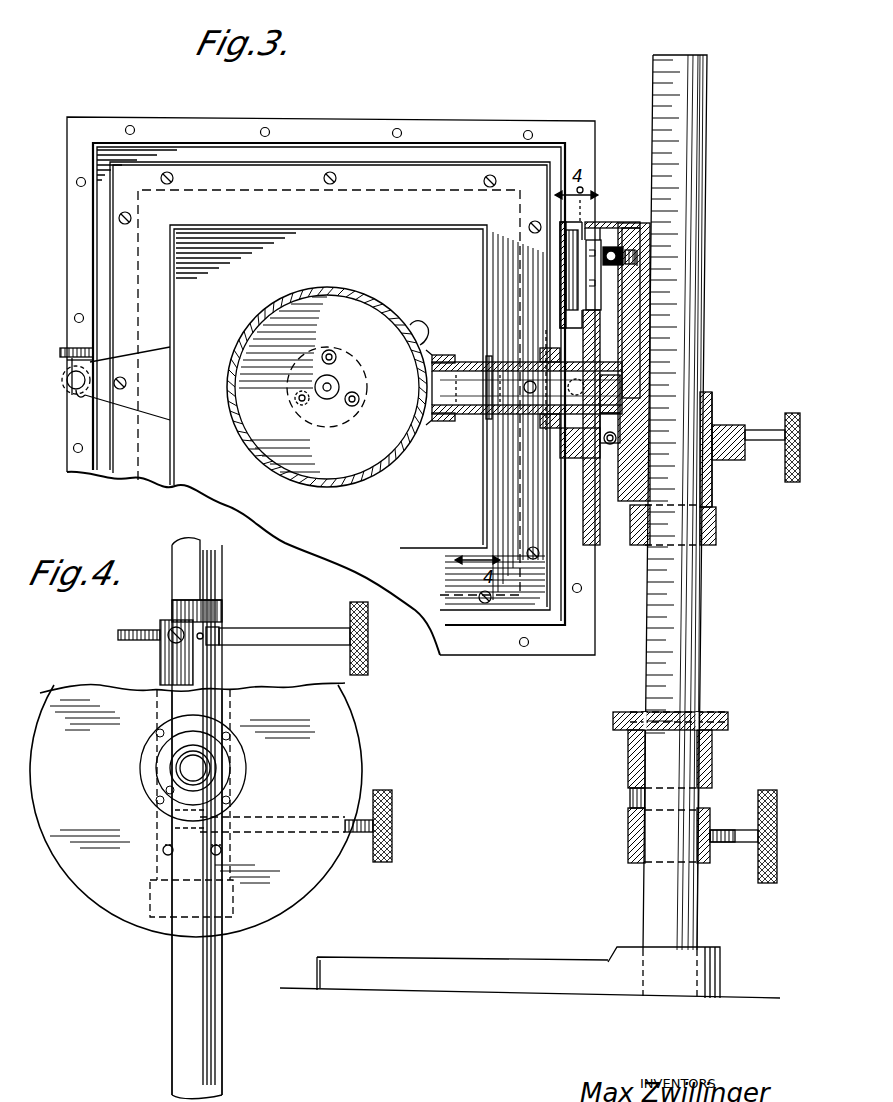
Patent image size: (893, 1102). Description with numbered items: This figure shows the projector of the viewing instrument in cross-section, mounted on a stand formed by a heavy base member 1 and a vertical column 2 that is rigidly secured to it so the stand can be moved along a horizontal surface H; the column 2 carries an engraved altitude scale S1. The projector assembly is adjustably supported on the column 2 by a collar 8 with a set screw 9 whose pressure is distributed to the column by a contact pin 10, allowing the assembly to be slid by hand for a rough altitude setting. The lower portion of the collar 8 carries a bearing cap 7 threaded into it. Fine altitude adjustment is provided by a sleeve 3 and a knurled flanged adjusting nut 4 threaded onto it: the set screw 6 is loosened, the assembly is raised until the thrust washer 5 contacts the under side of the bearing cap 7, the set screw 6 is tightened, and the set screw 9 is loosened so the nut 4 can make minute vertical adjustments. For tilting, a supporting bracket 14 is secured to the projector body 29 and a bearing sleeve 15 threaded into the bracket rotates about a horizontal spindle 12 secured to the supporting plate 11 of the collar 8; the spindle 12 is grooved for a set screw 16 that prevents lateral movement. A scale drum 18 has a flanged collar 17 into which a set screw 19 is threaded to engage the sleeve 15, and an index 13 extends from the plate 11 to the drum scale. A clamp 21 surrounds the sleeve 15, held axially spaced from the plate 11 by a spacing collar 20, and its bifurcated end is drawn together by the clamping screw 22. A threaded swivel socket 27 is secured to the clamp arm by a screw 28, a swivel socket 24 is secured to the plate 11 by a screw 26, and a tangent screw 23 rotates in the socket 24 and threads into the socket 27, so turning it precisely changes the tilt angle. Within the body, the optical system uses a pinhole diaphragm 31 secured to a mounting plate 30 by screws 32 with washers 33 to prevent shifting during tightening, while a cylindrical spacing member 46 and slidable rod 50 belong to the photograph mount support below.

In FIG. 3, the base member 1 is at (535, 962).
In FIG. 3, the vertical column 2 is at (650, 900).
In FIG. 4, the vertical column 2 is at (168, 964).
In FIG. 3, the sleeve 3 is at (630, 840).
In FIG. 3, the adjusting nut 4 is at (630, 755).
In FIG. 3, the thrust washer 5 is at (642, 712).
In FIG. 3, the set screw 6 is at (765, 790).
In FIG. 3, the bearing cap 7 is at (716, 535).
In FIG. 3, the collar 8 is at (712, 482).
In FIG. 3, the set screw 9 is at (745, 432).
In FIG. 3, the contact pin 10 is at (710, 415).
In FIG. 3, the supporting plate 11 is at (652, 282).
In FIG. 3, the spindle 12 is at (430, 396).
In FIG. 4, the spindle 12 is at (188, 768).
In FIG. 3, the index 13 is at (618, 228).
In FIG. 4, the index 13 is at (218, 605).
In FIG. 3, the supporting bracket 14 is at (416, 325).
In FIG. 3, the bearing sleeve 15 is at (453, 420).
In FIG. 4, the bearing sleeve 15 is at (216, 772).
In FIG. 3, the set screw 16 is at (486, 360).
In FIG. 3, the flanged collar 17 is at (540, 352).
In FIG. 4, the flanged collar 17 is at (232, 792).
In FIG. 3, the scale drum 18 is at (562, 252).
In FIG. 4, the scale drum 18 is at (345, 760).
In FIG. 3, the set screw 19 is at (548, 335).
In FIG. 3, the spacing collar 20 is at (618, 372).
In FIG. 3, the clamp 21 is at (602, 332).
In FIG. 4, the clamp 21 is at (165, 655).
In FIG. 4, the clamping screw 22 is at (393, 822).
In FIG. 4, the tangent screw 23 is at (322, 636).
In FIG. 3, the swivel socket 24 is at (616, 246).
In FIG. 4, the swivel socket 24 is at (216, 634).
In FIG. 3, the screw 26 is at (640, 258).
In FIG. 3, the threaded swivel socket 27 is at (611, 265).
In FIG. 4, the screw 28 is at (172, 626).
In FIG. 3, the body 29 is at (372, 300).
In FIG. 3, the mounting plate 30 is at (285, 423).
In FIG. 3, the diaphragm 31 is at (341, 382).
In FIG. 3, the screws 32 is at (335, 353).
In FIG. 3, the washers 33 is at (360, 399).
In FIG. 3, the cylindrical spacing member 46 is at (124, 348).
In FIG. 3, the slidable rod 50 is at (66, 357).
In FIG. 3, the altitude scale S1 is at (655, 148).
In FIG. 3, the horizontal surface H is at (277, 989).